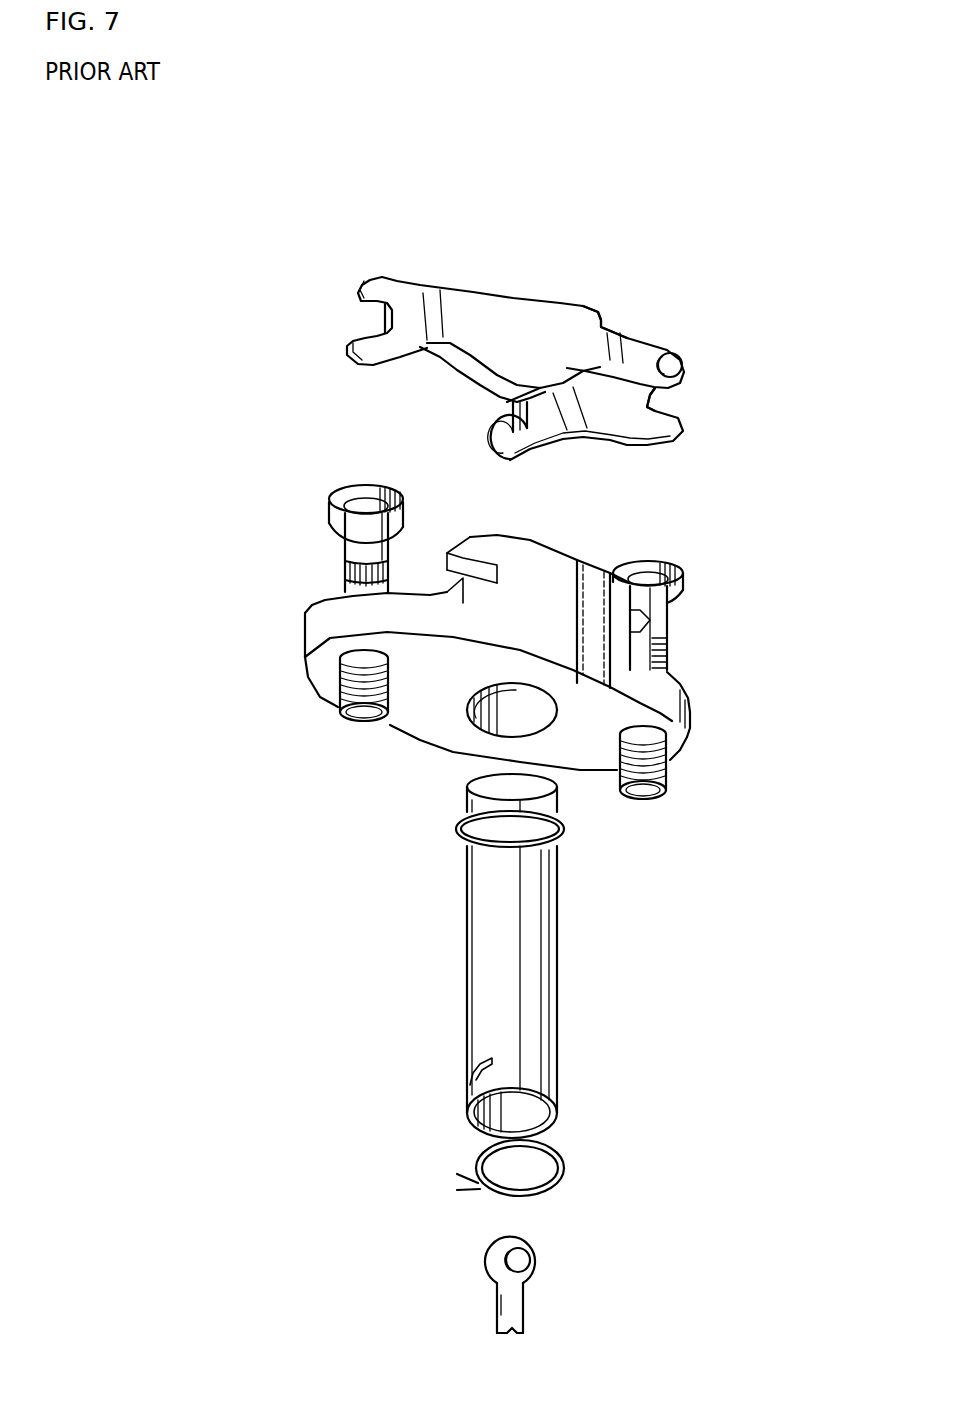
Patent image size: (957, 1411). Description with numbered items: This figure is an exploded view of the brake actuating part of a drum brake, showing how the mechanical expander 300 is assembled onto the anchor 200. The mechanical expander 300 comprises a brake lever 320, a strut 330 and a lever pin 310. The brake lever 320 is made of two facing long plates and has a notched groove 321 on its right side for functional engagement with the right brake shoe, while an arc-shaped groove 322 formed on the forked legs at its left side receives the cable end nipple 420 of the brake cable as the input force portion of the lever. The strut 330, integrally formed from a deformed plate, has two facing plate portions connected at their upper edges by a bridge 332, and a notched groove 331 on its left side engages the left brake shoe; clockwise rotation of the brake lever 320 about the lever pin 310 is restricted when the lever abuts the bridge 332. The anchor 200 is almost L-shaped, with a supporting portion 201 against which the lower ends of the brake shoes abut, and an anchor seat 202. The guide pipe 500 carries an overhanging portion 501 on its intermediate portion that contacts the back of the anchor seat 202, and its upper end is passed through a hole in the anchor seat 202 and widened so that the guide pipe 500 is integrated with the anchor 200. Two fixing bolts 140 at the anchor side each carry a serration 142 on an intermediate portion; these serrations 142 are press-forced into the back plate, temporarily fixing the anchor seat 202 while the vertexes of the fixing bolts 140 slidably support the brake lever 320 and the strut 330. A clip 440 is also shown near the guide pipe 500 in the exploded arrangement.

The mechanical expander 300 is at (521, 359).
The strut 330 is at (476, 313).
The notched groove 331 is at (330, 321).
The bridge 332 is at (618, 296).
The lever pin 310 is at (716, 343).
The brake lever 320 is at (594, 437).
The notched groove 321 is at (706, 390).
The arc-shaped groove 322 is at (480, 434).
The anchor 200 is at (510, 643).
The supporting portion 201 is at (620, 589).
The anchor seat 202 is at (729, 701).
The serration 142 is at (502, 577).
The fixing bolt 140 is at (505, 736).
The guide pipe 500 is at (526, 956).
The overhanging portion 501 is at (472, 870).
The clip 440 is at (472, 1153).
The cable end nipple 420 is at (457, 1273).